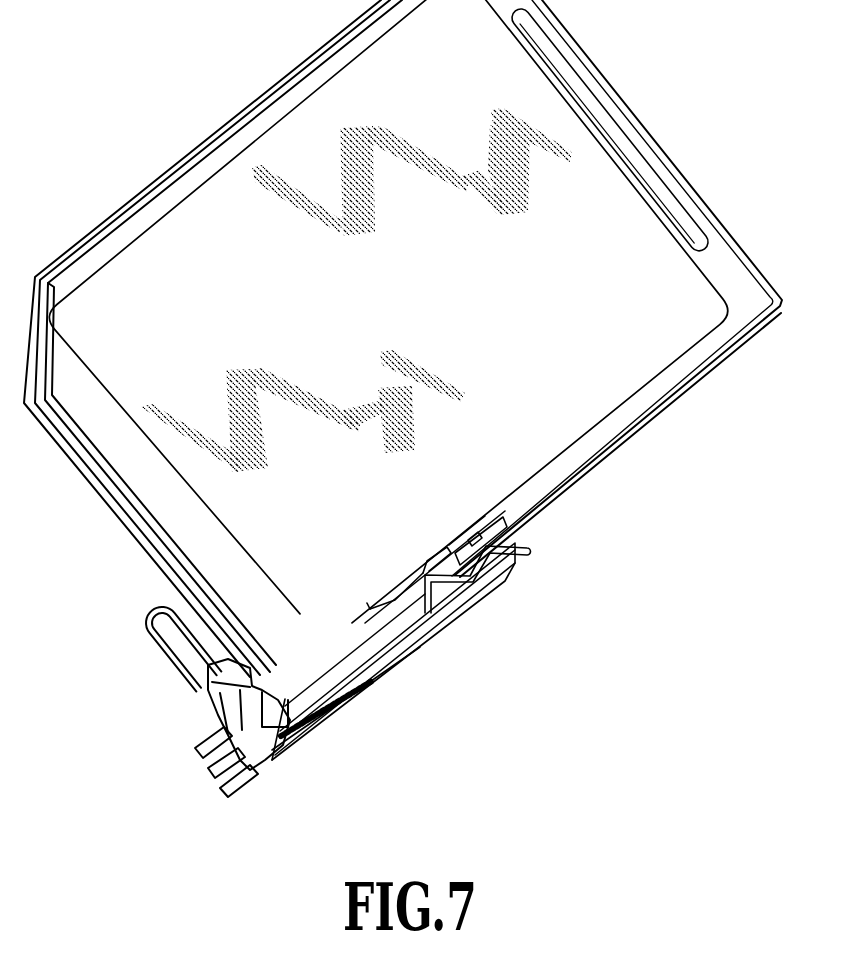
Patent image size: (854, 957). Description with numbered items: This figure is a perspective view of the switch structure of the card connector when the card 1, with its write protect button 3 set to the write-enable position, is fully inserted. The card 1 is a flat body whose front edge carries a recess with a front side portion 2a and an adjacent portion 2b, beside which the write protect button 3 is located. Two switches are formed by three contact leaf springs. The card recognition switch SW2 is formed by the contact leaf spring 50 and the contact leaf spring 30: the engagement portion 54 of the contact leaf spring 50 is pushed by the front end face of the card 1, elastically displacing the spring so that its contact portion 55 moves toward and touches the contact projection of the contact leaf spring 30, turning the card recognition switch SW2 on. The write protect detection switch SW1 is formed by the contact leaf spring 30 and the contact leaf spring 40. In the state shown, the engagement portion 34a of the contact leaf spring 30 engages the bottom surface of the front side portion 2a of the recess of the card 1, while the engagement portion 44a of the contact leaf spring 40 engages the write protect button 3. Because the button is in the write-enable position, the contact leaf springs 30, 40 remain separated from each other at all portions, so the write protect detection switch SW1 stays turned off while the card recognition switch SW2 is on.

The card 1 is at (552, 117).
The front side portion of the recess 2a is at (433, 557).
The case engagement tab 2b is at (490, 513).
The write protect button 3 is at (476, 538).
The contact leaf spring 30 is at (365, 650).
The engagement portion 34a is at (417, 565).
The contact leaf spring 40 is at (453, 613).
The engagement portion 44a is at (502, 557).
The contact leaf spring 50 is at (148, 642).
The engagement portion 54 is at (258, 665).
The contact portion 55 is at (263, 773).
The write protect detection switch SW1 is at (433, 690).
The card recognition switch SW2 is at (174, 692).